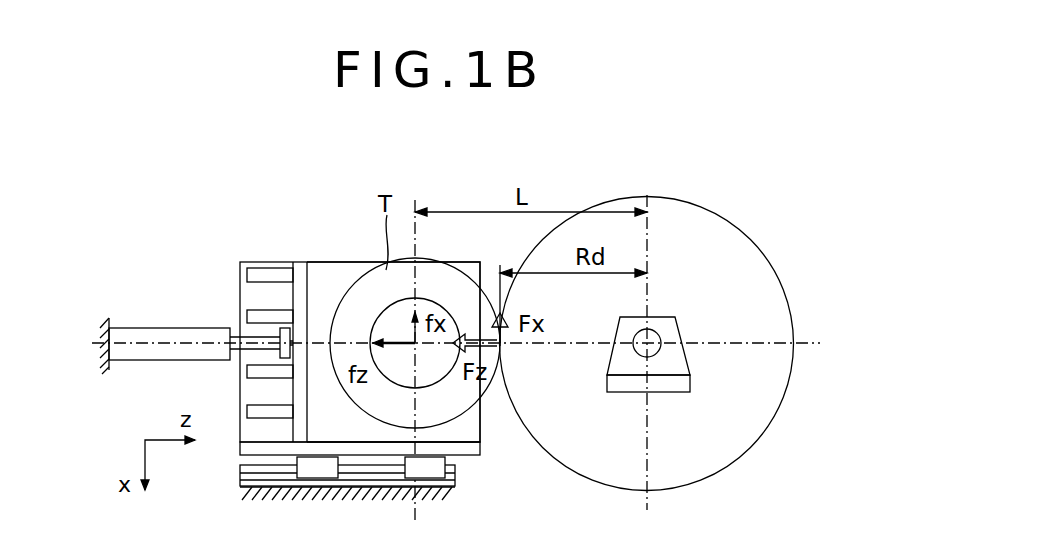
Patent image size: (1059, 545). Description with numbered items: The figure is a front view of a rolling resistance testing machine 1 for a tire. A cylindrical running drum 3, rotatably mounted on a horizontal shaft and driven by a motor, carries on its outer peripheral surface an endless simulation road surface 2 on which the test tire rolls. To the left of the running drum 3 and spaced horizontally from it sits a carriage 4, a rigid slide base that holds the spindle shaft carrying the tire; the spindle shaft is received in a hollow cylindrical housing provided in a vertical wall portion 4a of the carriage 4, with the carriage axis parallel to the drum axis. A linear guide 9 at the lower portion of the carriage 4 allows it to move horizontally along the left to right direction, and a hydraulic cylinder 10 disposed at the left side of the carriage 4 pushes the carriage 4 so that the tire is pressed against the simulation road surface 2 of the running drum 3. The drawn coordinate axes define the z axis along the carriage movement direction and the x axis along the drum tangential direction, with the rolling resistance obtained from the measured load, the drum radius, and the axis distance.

The rolling resistance testing machine 1 is at (659, 286).
The simulation road surface 2 is at (773, 265).
The running drum 3 is at (718, 227).
The carriage 4 is at (348, 310).
The vertical wall portion 4a is at (318, 273).
The linear guide 9 is at (443, 463).
The hydraulic cylinder 10 is at (157, 327).